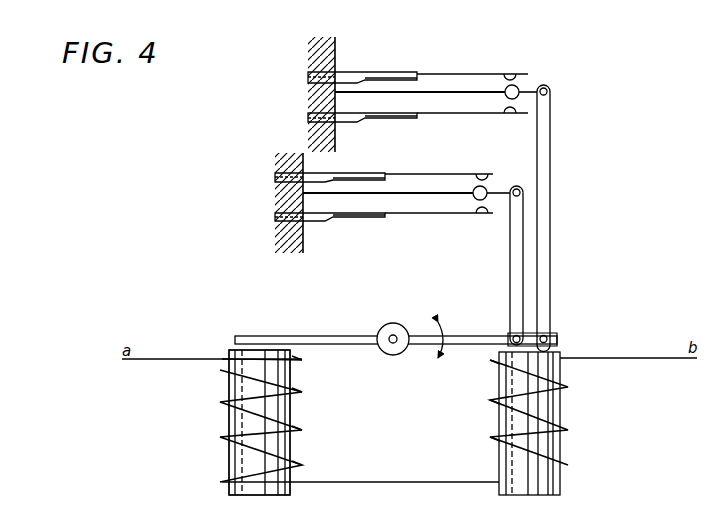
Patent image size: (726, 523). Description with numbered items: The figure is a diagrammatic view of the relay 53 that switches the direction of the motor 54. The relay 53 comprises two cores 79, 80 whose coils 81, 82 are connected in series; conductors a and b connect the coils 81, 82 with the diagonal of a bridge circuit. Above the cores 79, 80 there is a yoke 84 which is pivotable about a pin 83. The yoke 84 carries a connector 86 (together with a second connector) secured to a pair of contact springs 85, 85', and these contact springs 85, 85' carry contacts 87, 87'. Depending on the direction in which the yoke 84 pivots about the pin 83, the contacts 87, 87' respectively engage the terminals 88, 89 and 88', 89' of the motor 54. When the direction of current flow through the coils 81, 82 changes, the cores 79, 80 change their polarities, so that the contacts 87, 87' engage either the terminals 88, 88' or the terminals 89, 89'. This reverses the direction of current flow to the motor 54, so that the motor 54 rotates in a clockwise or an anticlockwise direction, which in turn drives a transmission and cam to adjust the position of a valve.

The motor 54 is at (363, 62).
The terminal 88' is at (539, 199).
The contact 87' is at (535, 77).
The contact spring 85' is at (563, 211).
The terminal 89' is at (547, 113).
The terminal 88 is at (384, 201).
The contact 87 is at (415, 179).
The contact spring 85 is at (547, 184).
The terminal 89 is at (384, 221).
The connector 86 is at (510, 275).
The yoke 84 is at (352, 320).
The pin 83 is at (398, 336).
The relay 53 is at (221, 414).
The coil 81 is at (284, 446).
The core 79 is at (240, 489).
The coil 82 is at (556, 443).
The core 80 is at (560, 486).